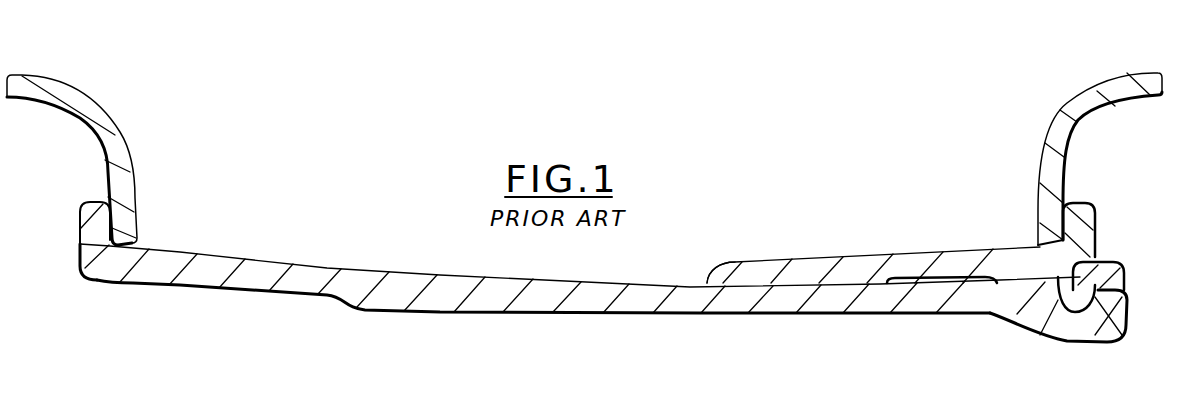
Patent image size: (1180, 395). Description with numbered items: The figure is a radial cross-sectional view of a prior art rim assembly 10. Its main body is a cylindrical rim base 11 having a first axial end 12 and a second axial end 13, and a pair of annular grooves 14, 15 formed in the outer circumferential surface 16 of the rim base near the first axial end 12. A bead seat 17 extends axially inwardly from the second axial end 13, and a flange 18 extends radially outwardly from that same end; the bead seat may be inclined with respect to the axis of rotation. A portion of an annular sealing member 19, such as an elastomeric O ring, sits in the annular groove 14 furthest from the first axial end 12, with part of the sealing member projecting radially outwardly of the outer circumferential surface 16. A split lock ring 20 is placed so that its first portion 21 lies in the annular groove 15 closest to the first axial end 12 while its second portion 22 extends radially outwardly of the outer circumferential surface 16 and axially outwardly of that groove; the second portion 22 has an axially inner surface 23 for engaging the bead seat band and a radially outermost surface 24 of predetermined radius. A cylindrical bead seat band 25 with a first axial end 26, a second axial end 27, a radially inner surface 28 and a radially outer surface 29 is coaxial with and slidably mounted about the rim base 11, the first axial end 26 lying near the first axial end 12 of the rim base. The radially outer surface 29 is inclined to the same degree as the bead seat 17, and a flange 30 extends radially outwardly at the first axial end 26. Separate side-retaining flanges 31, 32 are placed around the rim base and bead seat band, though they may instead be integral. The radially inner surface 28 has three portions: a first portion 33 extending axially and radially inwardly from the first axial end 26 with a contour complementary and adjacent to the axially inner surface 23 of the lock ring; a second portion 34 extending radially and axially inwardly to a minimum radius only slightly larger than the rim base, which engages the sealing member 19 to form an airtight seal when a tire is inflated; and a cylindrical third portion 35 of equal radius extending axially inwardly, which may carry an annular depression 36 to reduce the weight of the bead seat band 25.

The rim assembly 10 is at (247, 108).
The rim base 11 is at (472, 313).
The first axial end 12 is at (1125, 317).
The second axial end 13 is at (88, 250).
The annular groove 14 is at (1027, 295).
The annular groove 15 is at (1072, 325).
The outer circumferential surface 16 is at (655, 287).
The bead seat 17 is at (217, 263).
The flange 18 is at (90, 228).
The annular sealing member 19 is at (990, 293).
The split lock ring 20 is at (1128, 280).
The first portion of the lock ring 21 is at (1115, 340).
The second portion of the lock ring 22 is at (1118, 273).
The axially inner surface 23 is at (1115, 257).
The radially outermost surface 24 is at (1107, 253).
The bead seat band 25 is at (812, 267).
The first axial end of the bead seat band 26 is at (1097, 250).
The second axial end of the bead seat band 27 is at (710, 280).
The radially inner surface 28 is at (798, 287).
The radially outer surface 29 is at (845, 257).
The flange 30 is at (1080, 207).
The side-retaining flange 31 is at (110, 113).
The side-retaining flange 32 is at (1053, 135).
The first portion of the radially inner surface 33 is at (1040, 270).
The second portion of the radially inner surface 34 is at (998, 280).
The third portion of the radially inner surface 35 is at (957, 250).
The annular depression 36 is at (895, 282).